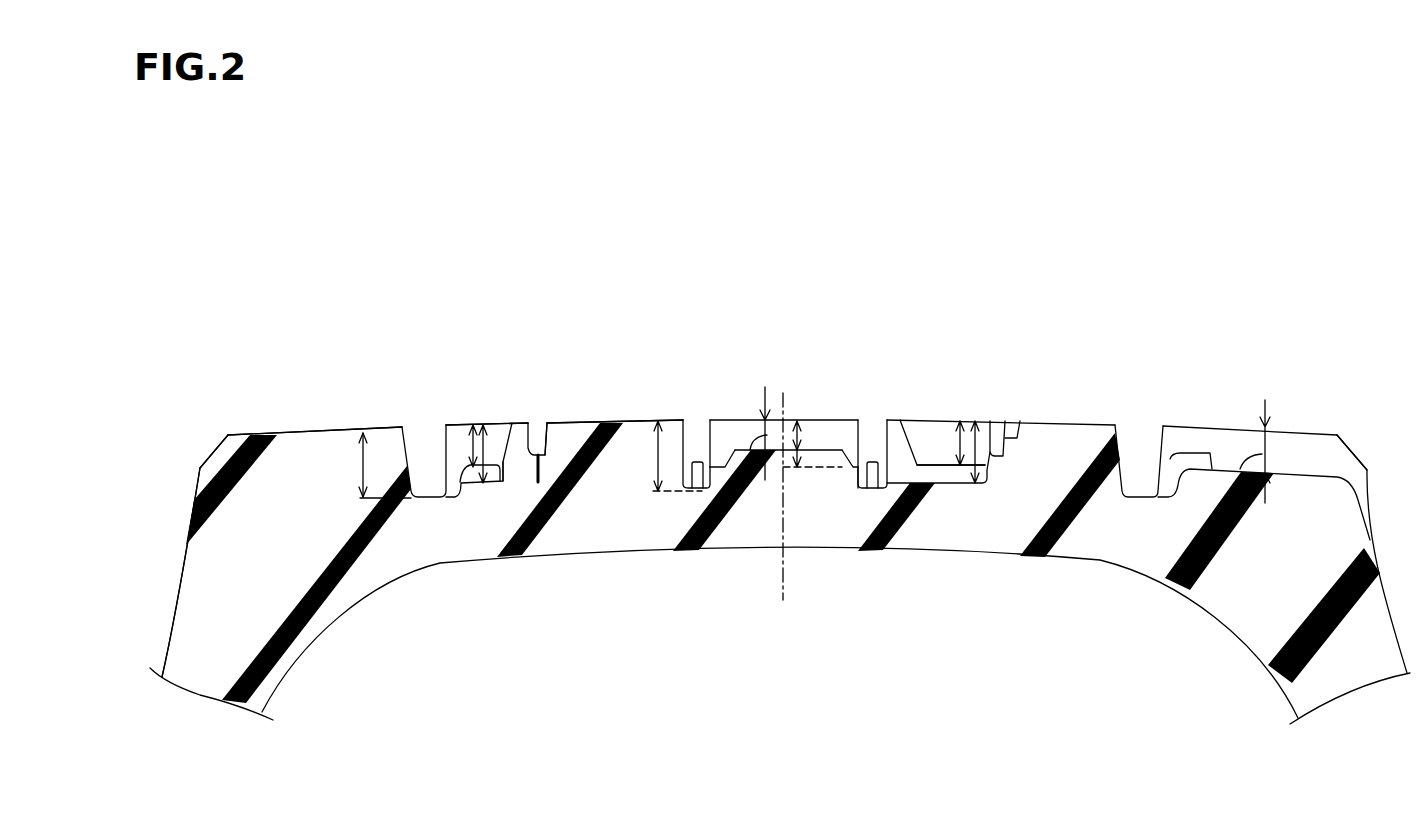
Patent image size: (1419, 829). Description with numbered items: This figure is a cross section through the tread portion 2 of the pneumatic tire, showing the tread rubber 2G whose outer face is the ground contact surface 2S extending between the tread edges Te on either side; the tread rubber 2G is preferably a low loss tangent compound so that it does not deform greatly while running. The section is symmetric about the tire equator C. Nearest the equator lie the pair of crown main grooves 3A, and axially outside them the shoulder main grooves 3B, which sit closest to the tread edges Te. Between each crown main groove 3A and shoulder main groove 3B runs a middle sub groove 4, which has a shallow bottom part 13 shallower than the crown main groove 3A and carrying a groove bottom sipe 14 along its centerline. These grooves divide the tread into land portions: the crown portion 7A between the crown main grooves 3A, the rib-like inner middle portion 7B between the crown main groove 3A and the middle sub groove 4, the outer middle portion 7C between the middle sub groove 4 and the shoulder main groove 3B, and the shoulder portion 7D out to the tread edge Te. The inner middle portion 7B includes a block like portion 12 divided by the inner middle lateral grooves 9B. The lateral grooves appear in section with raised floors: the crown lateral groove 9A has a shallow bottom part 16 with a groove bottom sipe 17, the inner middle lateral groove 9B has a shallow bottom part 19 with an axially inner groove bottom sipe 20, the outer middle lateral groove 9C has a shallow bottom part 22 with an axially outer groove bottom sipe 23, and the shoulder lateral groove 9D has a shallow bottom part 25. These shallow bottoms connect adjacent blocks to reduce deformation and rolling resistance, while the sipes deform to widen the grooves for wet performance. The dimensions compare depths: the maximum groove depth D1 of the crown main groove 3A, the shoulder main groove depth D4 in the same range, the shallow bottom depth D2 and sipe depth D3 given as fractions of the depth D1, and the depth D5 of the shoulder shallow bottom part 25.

The tread portion 2 is at (1130, 278).
The ground contact surface 2S is at (298, 432).
The tread rubber 2G is at (253, 518).
The tread edge Te is at (228, 435).
The crown main groove 3A is at (690, 432).
The shoulder main groove 3B is at (425, 432).
The middle sub groove 4 is at (540, 425).
The crown portion 7A is at (742, 415).
The inner middle portion 7B is at (600, 418).
The outer middle portion 7C is at (520, 424).
The shoulder portion 7D is at (342, 424).
The crown lateral groove 9A is at (822, 428).
The inner middle lateral groove 9B is at (940, 430).
The outer middle lateral groove 9C is at (497, 426).
The shoulder lateral groove 9D is at (1225, 433).
The block like portion 12 is at (698, 462).
The shallow bottom part 13 is at (552, 440).
The groove bottom sipe 14 is at (547, 440).
The shallow bottom part 16 is at (673, 492).
The groove bottom sipe 17 is at (855, 470).
The shallow bottom part 19 is at (935, 466).
The axially inner groove bottom sipe 20 is at (873, 465).
The shallow bottom part 22 is at (500, 482).
The axially outer groove bottom sipe 23 is at (462, 484).
The shallow bottom part 25 is at (1177, 460).
The tire equator C is at (783, 481).
The maximum groove depth D1 is at (658, 456).
The depth of shallow bottom part D2 is at (481, 485).
The depth of groove bottom sipe D3 is at (540, 484).
The groove depth D4 is at (362, 498).
The depth of shallow bottom part D5 is at (1262, 456).